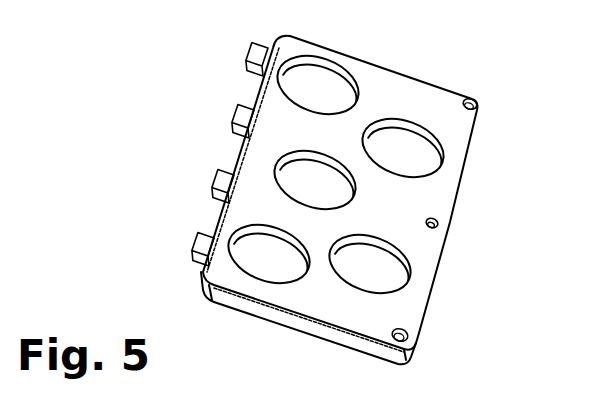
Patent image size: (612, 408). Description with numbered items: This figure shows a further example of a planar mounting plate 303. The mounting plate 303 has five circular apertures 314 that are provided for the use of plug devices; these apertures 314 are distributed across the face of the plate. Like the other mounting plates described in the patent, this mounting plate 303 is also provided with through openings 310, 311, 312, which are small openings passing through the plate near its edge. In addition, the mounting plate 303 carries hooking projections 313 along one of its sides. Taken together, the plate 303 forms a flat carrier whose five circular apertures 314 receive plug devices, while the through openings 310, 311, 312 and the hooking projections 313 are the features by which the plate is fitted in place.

The mounting plate 303 is at (153, 137).
The through opening 310 is at (480, 106).
The through opening 311 is at (446, 222).
The through opening 312 is at (413, 334).
The hooking projections 313 is at (254, 45).
The circular apertures 314 is at (331, 192).